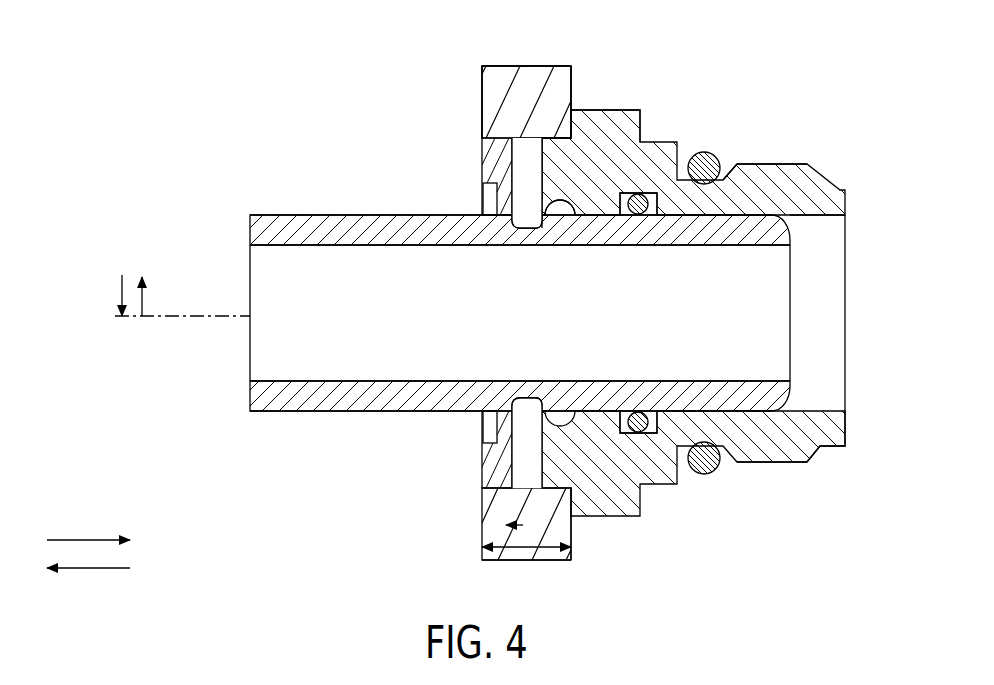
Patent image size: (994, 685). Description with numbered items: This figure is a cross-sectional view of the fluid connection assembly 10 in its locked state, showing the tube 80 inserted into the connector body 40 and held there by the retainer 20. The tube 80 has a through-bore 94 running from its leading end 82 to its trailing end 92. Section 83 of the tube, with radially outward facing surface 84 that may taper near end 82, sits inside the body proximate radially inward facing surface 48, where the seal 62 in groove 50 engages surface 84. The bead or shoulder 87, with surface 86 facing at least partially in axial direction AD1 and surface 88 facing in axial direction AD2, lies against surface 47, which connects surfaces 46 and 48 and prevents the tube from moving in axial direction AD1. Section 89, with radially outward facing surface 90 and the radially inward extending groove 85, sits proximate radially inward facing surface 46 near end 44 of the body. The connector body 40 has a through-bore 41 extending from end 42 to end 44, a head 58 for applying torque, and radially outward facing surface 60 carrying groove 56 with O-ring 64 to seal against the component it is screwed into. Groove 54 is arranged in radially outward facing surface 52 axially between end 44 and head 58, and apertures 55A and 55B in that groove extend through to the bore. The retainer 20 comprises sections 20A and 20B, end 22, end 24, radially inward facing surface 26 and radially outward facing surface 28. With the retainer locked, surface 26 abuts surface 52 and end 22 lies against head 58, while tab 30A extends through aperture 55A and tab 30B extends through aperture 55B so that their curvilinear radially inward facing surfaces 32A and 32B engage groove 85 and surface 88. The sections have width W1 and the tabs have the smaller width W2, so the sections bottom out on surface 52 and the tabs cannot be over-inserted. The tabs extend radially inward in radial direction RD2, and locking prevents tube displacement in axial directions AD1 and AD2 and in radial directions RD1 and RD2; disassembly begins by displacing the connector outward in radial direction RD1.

The fluid connection assembly 10 is at (300, 110).
The retainer 20 is at (557, 72).
The section 20A is at (530, 78).
The section 20B is at (523, 508).
The end 22 is at (571, 85).
The end 24 is at (482, 78).
The radially inward facing surface 26 is at (580, 492).
The radially outward facing surface 28 is at (485, 66).
The tab 30A is at (525, 178).
The tab 30B is at (533, 473).
The radially inward facing surface 32A is at (527, 240).
The radially inward facing surface 32B is at (500, 400).
The connector body 40 is at (817, 188).
The through-bore 41 is at (818, 313).
The end 42 is at (846, 442).
The end 44 is at (483, 170).
The radially inward facing surface 46 is at (572, 180).
The surface 47 is at (566, 205).
The radially inward facing surface 48 is at (815, 455).
The groove 50 is at (642, 195).
The radially outward facing surface 52 is at (630, 488).
The groove 54 is at (572, 515).
The aperture 55A is at (490, 185).
The aperture 55B is at (500, 445).
The groove 56 is at (752, 167).
The head 58 is at (630, 110).
The radially outward facing surface 60 is at (797, 164).
The seal 62 is at (650, 197).
The O-ring 64 is at (706, 160).
The tube 80 is at (308, 228).
The end 82 is at (795, 243).
The section 83 is at (733, 418).
The radially outward facing surface 84 is at (662, 215).
The groove 85 is at (543, 400).
The surface 86 is at (572, 214).
The shoulder 87 is at (553, 215).
The surface 88 is at (547, 207).
The section 89 is at (356, 437).
The radially outward facing surface 90 is at (270, 213).
The end 92 is at (250, 398).
The through-bore 94 is at (283, 271).
The width W1 is at (537, 549).
The width W2 is at (505, 486).
The radial direction RD1 is at (142, 300).
The radial direction RD2 is at (122, 280).
The axial direction AD1 is at (90, 540).
The axial direction AD2 is at (98, 568).